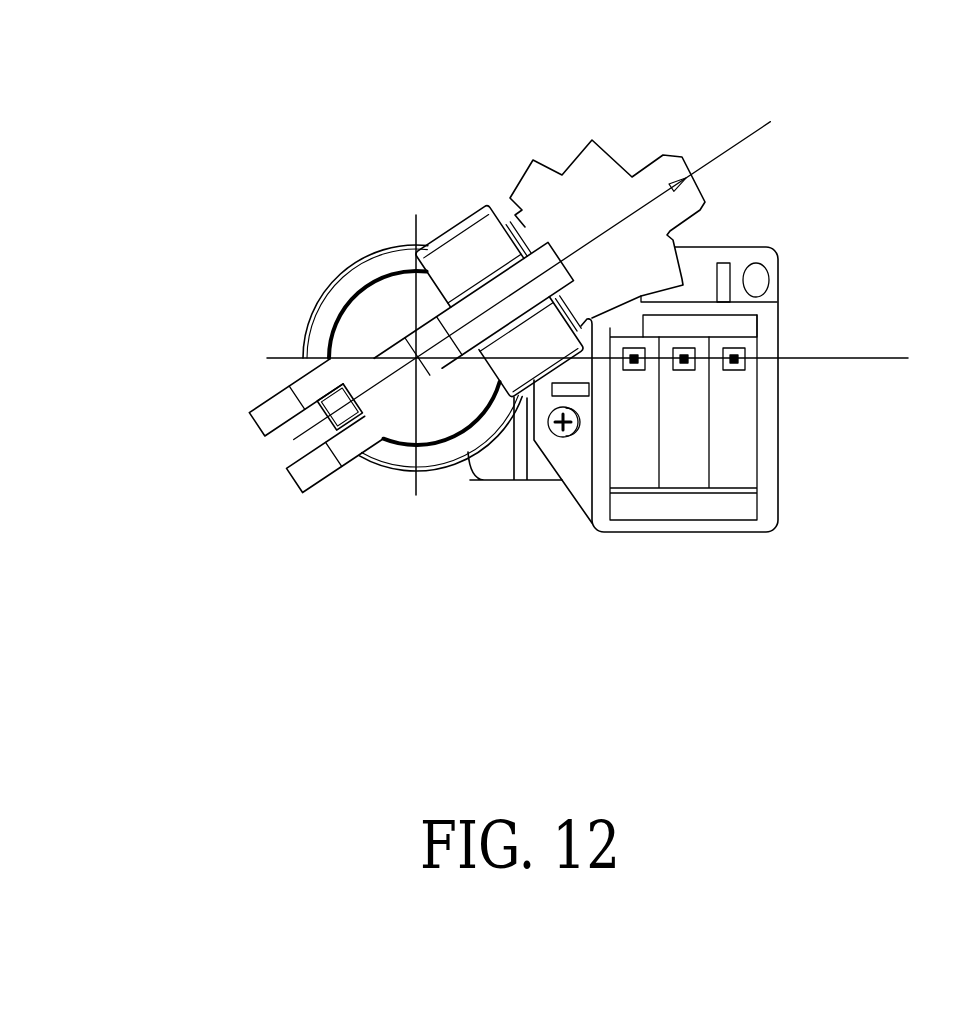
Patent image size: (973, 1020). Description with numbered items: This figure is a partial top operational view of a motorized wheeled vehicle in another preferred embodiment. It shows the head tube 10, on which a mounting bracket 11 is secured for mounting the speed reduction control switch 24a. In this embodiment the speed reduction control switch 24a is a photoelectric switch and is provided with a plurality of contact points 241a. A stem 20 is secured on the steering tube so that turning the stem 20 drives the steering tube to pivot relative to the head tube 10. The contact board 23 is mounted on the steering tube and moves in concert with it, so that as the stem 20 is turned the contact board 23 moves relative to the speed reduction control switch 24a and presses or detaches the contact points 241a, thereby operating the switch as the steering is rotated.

The head tube 10 is at (390, 453).
The mounting bracket 11 is at (503, 458).
The stem 20 is at (407, 353).
The contact board 23 is at (598, 190).
The speed reduction control switch 24a is at (622, 437).
The contact points 241a is at (645, 367).